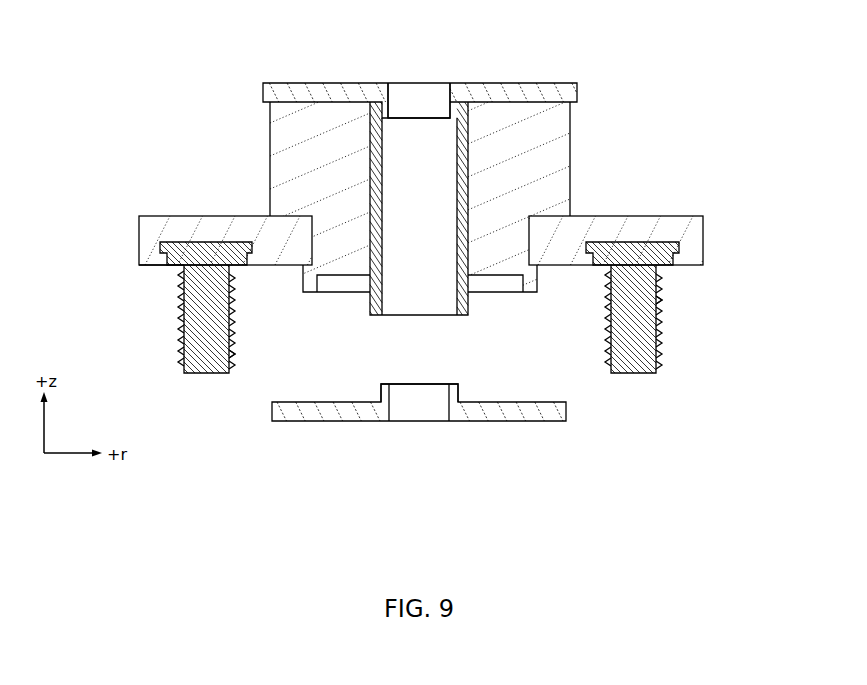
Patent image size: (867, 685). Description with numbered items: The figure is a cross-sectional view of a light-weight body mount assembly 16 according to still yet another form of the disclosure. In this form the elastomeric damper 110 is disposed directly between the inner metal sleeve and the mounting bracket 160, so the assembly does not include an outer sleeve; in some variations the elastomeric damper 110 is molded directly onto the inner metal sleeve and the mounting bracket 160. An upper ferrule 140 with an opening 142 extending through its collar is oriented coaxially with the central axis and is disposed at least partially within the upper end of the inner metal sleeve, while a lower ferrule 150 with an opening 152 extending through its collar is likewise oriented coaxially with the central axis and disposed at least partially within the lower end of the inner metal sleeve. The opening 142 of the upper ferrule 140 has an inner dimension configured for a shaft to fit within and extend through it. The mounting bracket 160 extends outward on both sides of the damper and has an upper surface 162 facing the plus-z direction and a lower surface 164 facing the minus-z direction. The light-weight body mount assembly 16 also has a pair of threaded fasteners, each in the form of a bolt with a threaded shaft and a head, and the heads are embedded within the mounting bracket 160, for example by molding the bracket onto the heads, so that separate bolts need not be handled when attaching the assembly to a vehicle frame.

The light-weight body mount assembly 16 is at (654, 50).
The elastomeric damper 110 is at (259, 146).
The upper ferrule 140 is at (510, 71).
The opening 142 is at (417, 70).
The lower ferrule 150 is at (511, 435).
The opening 152 is at (414, 436).
The mounting bracket 160 is at (693, 205).
The upper surface 162 is at (152, 215).
The lower surface 164 is at (152, 267).